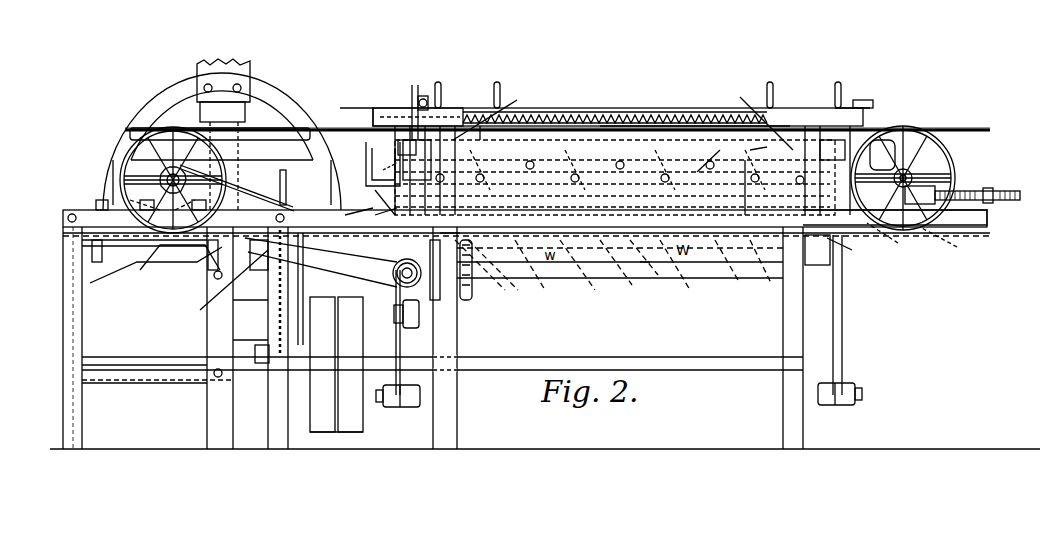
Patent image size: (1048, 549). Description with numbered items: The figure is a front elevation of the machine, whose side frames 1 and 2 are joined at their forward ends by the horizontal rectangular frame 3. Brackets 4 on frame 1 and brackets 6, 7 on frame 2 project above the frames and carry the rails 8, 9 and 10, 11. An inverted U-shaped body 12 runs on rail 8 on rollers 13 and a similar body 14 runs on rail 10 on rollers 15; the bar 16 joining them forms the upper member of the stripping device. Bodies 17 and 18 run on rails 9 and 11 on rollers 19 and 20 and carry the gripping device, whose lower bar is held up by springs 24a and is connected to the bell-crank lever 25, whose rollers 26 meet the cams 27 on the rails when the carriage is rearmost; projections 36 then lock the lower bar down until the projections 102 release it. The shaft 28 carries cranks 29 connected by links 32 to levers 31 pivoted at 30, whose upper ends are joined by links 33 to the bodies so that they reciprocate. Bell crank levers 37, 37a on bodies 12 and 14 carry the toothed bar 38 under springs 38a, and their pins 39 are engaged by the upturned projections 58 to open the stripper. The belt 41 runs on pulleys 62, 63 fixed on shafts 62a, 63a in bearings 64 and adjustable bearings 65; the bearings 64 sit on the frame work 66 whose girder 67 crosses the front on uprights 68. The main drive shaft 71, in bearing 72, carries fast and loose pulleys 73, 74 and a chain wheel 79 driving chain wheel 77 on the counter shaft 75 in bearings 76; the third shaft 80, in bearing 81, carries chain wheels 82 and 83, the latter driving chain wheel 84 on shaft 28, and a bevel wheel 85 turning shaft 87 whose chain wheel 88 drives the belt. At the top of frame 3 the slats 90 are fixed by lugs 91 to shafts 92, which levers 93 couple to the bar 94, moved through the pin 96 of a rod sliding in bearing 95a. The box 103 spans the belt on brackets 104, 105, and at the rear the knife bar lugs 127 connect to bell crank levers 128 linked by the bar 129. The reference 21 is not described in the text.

The frame 1 is at (450, 407).
The frame 2 is at (793, 410).
The rectangular frame 3 is at (570, 140).
The bracket 4 is at (368, 142).
The bracket 6 is at (882, 155).
The bracket 7 is at (645, 255).
The rail 8 is at (373, 126).
The rail 9 is at (413, 140).
The rail 10 is at (873, 128).
The rail 11 is at (752, 178).
The body 12 is at (370, 158).
The rollers 13 is at (397, 140).
The body 14 is at (917, 133).
The rollers 15 is at (850, 120).
The bar 16 is at (603, 103).
The body 17 is at (412, 120).
The body 18 is at (817, 110).
The rollers 19 is at (487, 135).
The rollers 20 is at (796, 168).
The slide 21 is at (448, 221).
The springs 24a is at (470, 90).
The bell-crank lever 25 is at (850, 103).
The rollers 26 is at (536, 180).
The cams 27 is at (579, 177).
The shaft 28 is at (570, 258).
The crank 29 is at (820, 245).
The pivot 30 is at (388, 403).
The lever 31 is at (400, 345).
The links 32 is at (408, 315).
The links 33 is at (620, 146).
The projections 36 is at (623, 117).
The bell crank lever 37 is at (372, 118).
The bell crank lever 37a is at (855, 108).
The toothed bar 38 is at (687, 117).
The springs 38a is at (422, 93).
The pin 39 is at (670, 208).
The belt 41 is at (280, 133).
The upturned projection 58 is at (393, 195).
The pulley 62 is at (230, 180).
The shaft 62a is at (160, 175).
The pulley 63 is at (935, 150).
The shaft 63a is at (945, 165).
The bearings 64 is at (147, 205).
The bearings 65 is at (930, 199).
The frame work 66 is at (83, 315).
The girder 67 is at (257, 237).
The uprights 68 is at (455, 333).
The main drive shaft 71 is at (687, 355).
The bearing 72 is at (257, 353).
The fast pulley 73 is at (323, 407).
The loose pulley 74 is at (362, 432).
The counter shaft 75 is at (175, 243).
The bearings 76 is at (100, 250).
The chain wheel 77 is at (283, 180).
The chain wheel 79 is at (270, 350).
The third shaft 80 is at (653, 272).
The bearing 81 is at (222, 283).
The chain wheel 82 is at (303, 300).
The chain wheel 83 is at (470, 297).
The chain wheel 84 is at (457, 260).
The bevel wheel 85 is at (403, 300).
The shaft 87 is at (397, 287).
The chain wheel 88 is at (397, 264).
The slats 90 is at (580, 162).
The lugs 91 is at (597, 149).
The shafts 92 is at (644, 167).
The levers 93 is at (487, 184).
The bar 94 is at (625, 280).
The bearing 95a is at (735, 277).
The pin 96 is at (770, 285).
The projections 102 is at (457, 112).
The box-like structure 103 is at (250, 68).
The bracket 104 is at (213, 332).
The bracket 105 is at (283, 95).
The lugs 127 is at (593, 283).
The bell crank levers 128 is at (537, 290).
The bar 129 is at (497, 277).